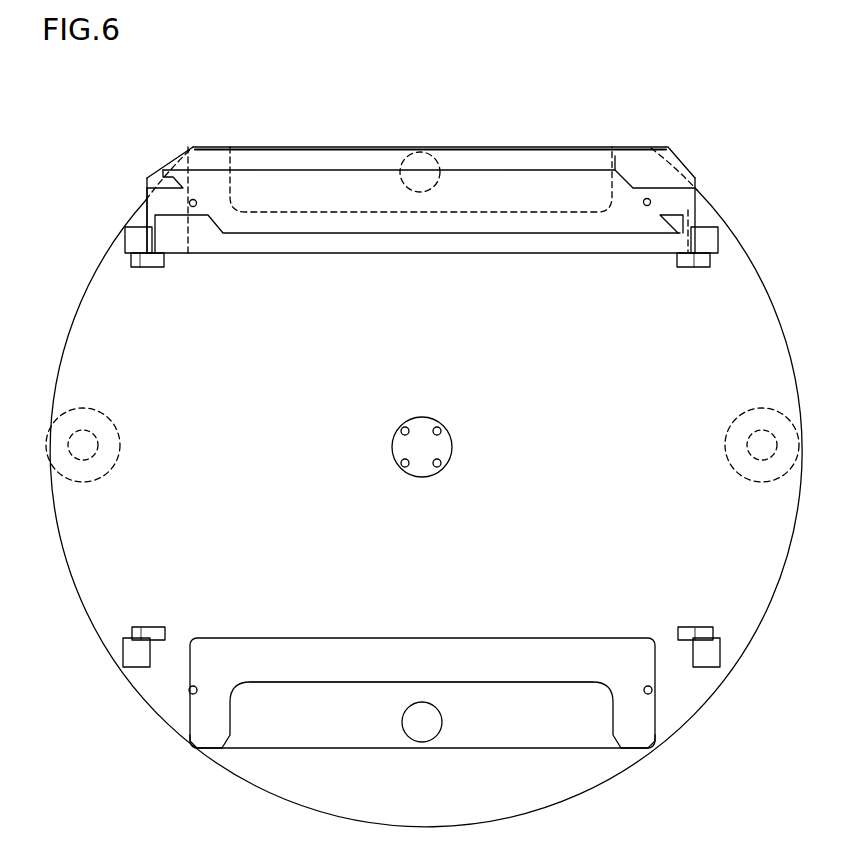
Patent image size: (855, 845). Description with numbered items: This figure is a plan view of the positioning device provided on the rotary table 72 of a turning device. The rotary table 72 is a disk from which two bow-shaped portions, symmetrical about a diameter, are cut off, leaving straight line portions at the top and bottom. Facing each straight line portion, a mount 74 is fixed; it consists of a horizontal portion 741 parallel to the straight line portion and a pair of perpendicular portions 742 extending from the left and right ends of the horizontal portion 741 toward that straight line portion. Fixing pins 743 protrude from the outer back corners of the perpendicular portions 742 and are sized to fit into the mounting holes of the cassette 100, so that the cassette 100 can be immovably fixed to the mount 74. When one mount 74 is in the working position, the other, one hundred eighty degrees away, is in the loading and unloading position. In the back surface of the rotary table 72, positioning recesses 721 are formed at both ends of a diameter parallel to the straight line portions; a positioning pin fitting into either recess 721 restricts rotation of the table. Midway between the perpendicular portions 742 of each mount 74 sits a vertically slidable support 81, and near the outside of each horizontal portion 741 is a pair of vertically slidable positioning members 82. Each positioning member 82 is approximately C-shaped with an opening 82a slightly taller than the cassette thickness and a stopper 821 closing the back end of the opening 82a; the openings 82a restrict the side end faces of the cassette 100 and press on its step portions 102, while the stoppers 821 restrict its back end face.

The rotary table 72 is at (80, 350).
The positioning recess 721 is at (80, 482).
The mount 74 is at (322, 210).
The horizontal portion 741 is at (503, 662).
The perpendicular portion 742 is at (198, 733).
The fixing pin 743 is at (648, 197).
The support 81 is at (437, 160).
The positioning member 82 is at (124, 240).
The opening 82a is at (135, 262).
The stopper 821 is at (160, 268).
The cassette 100 is at (375, 255).
The step portion 102 is at (147, 218).